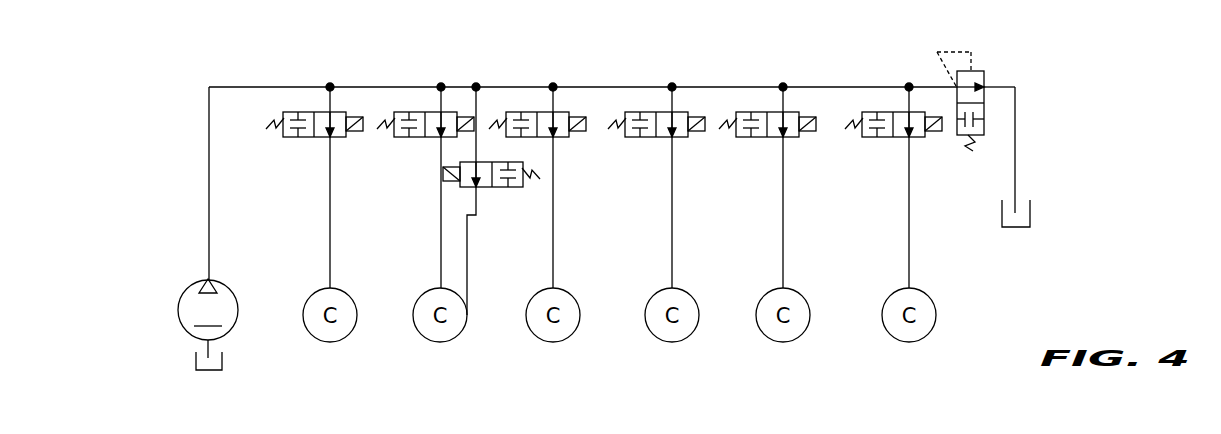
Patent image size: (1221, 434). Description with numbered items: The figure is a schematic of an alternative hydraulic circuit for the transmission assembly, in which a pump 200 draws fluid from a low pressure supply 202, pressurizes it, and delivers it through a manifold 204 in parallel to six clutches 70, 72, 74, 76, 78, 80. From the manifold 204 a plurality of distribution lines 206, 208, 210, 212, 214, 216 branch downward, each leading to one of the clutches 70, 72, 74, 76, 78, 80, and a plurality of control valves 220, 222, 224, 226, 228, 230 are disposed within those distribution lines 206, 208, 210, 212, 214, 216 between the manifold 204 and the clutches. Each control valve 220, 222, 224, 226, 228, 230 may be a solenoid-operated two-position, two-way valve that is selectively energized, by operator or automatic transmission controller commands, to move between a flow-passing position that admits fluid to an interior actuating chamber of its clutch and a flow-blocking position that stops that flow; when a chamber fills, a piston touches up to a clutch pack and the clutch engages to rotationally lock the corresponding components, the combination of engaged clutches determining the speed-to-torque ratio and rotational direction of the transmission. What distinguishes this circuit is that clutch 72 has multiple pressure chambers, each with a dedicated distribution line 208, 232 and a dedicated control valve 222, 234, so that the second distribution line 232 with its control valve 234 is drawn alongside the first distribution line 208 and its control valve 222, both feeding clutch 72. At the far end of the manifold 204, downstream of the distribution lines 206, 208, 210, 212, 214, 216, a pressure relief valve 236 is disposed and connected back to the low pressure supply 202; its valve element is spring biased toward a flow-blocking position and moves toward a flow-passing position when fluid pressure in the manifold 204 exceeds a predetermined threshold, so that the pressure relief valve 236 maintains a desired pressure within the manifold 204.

The clutch 70 is at (348, 295).
The clutch 72 is at (458, 333).
The clutch 74 is at (571, 295).
The clutch 76 is at (690, 295).
The clutch 78 is at (801, 295).
The clutch 80 is at (927, 295).
The pump 200 is at (208, 222).
The low pressure supply 202 is at (222, 358).
The manifold 204 is at (263, 86).
The distribution line 206 is at (331, 189).
The distribution line 208 is at (440, 229).
The distribution line 210 is at (554, 188).
The distribution line 212 is at (673, 188).
The distribution line 214 is at (784, 188).
The distribution line 216 is at (910, 188).
The control valve 220 is at (307, 138).
The control valve 222 is at (418, 138).
The control valve 224 is at (530, 111).
The control valve 226 is at (657, 138).
The control valve 228 is at (763, 138).
The control valve 230 is at (888, 138).
The distribution line 232 is at (468, 240).
The control valve 234 is at (486, 188).
The pressure relief valve 236 is at (984, 76).